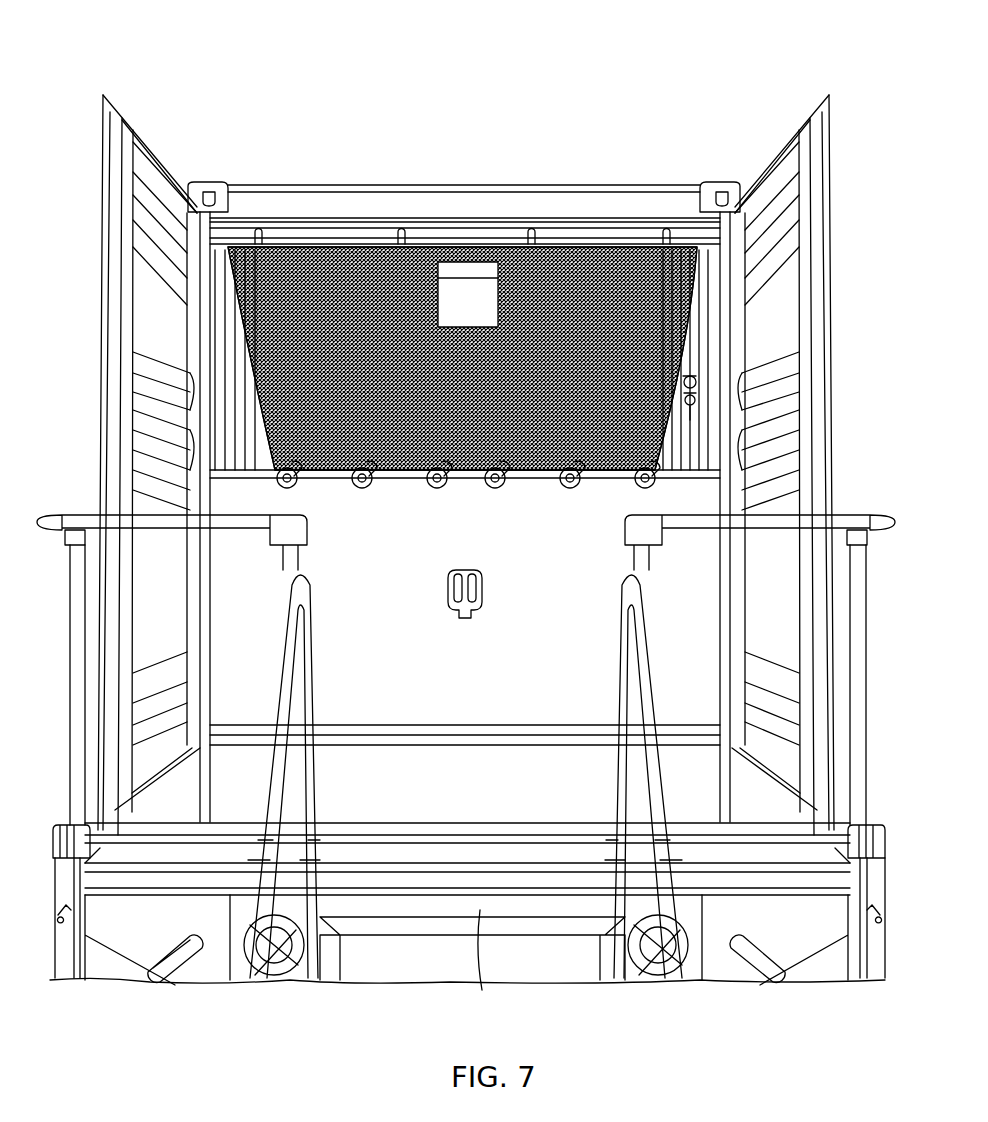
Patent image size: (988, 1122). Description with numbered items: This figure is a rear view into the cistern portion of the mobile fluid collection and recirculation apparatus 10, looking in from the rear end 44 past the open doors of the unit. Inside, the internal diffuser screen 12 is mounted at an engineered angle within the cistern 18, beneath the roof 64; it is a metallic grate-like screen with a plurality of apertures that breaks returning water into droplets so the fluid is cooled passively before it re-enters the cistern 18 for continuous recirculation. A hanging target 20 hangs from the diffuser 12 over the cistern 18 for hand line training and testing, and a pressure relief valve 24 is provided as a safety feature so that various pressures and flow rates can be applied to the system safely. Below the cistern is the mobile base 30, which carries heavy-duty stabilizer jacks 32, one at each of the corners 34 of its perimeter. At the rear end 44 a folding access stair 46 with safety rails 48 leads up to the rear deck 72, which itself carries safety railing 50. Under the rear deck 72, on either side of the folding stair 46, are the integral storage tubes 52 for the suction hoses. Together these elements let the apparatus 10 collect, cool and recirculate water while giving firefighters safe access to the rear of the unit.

The mobile fluid collection and recirculation apparatus 10 is at (150, 60).
The internal diffuser screen 12 is at (626, 246).
The cistern 18 is at (305, 250).
The hanging target 20 is at (470, 290).
The pressure relief valve 24 is at (678, 250).
The mobile base 30 is at (70, 806).
The stabilizer jack 32 is at (66, 972).
The corner 34 is at (54, 840).
The rear end 44 is at (55, 440).
The folding access stair 46 is at (484, 905).
The safety rails 48 is at (680, 772).
The safety railing 50 is at (85, 517).
The storage tube 52 is at (275, 962).
The roof 64 is at (258, 185).
The rear deck 72 is at (477, 793).